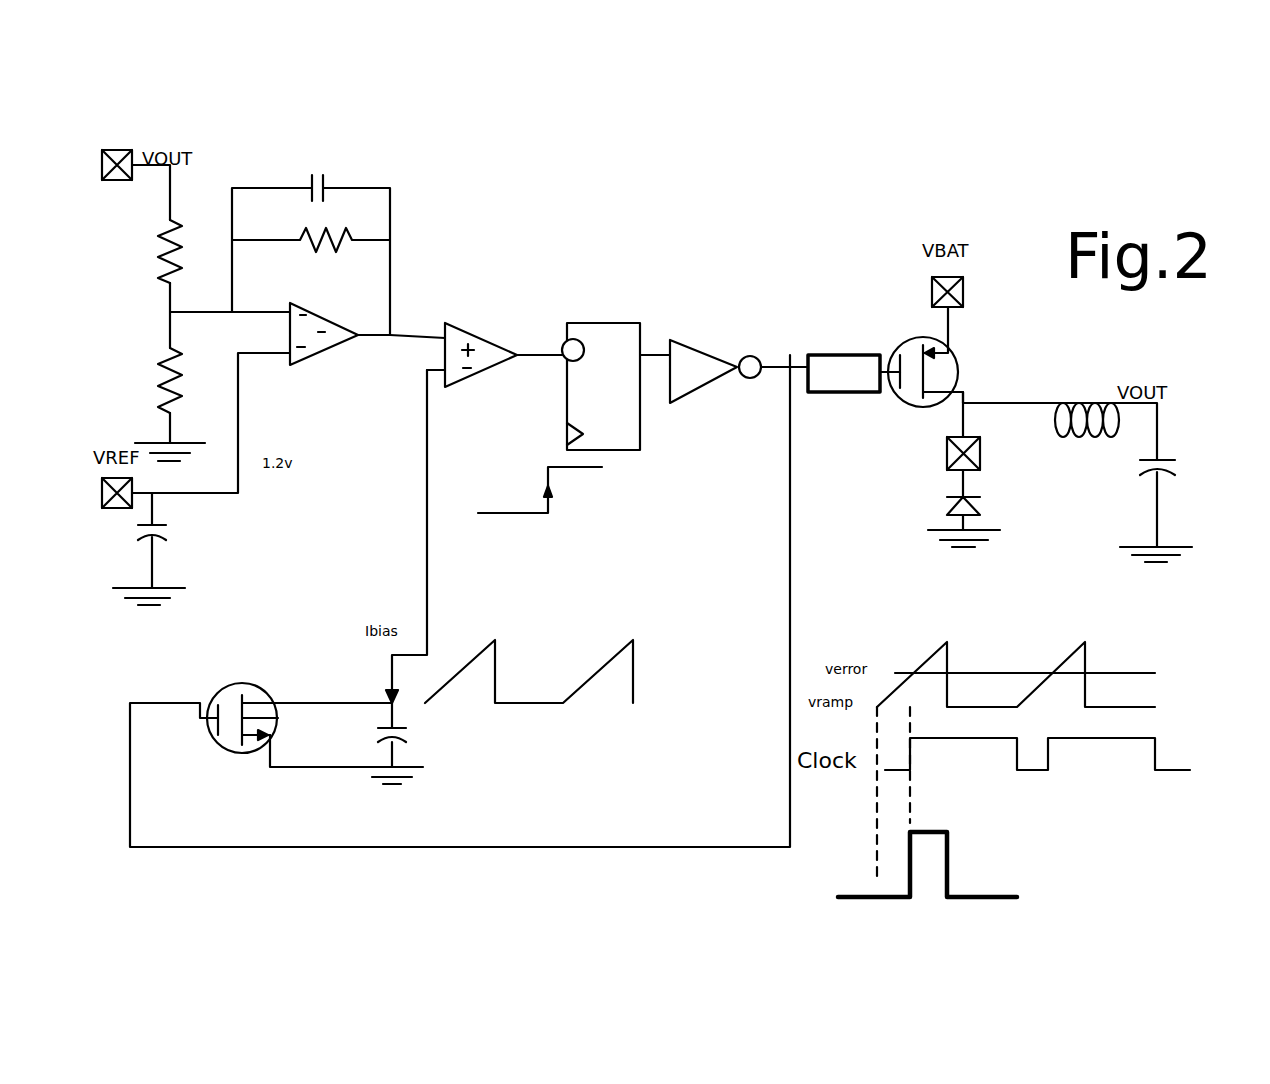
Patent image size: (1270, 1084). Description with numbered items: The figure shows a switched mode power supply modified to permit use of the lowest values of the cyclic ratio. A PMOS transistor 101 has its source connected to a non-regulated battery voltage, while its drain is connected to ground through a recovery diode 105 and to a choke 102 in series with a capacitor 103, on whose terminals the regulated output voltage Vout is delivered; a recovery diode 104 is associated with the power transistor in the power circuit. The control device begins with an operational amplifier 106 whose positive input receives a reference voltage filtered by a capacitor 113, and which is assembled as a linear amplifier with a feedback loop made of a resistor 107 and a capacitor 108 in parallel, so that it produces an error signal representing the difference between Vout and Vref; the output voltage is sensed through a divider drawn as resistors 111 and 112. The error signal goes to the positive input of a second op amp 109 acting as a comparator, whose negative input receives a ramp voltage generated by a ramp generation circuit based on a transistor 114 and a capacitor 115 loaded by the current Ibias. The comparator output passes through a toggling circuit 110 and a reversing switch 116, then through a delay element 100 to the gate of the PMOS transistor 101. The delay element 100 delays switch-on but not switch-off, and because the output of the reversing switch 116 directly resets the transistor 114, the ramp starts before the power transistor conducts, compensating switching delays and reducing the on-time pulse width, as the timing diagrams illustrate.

The delay element 100 is at (823, 352).
The PMOS transistor 101 is at (912, 345).
The choke 102 is at (1090, 403).
The capacitor 103 is at (1175, 462).
The recovery diode 104 is at (950, 505).
The recovery diode 105 is at (994, 457).
The operational amplifier 106 is at (333, 361).
The resistor 107 is at (331, 255).
The capacitor 108 is at (313, 175).
The second op amp 109 is at (486, 359).
The toggling circuit 110 is at (627, 323).
The feedback divider resistor 111 is at (152, 248).
The feedback divider resistor 112 is at (152, 372).
The capacitor 113 is at (190, 549).
The transistor 114 is at (215, 700).
The capacitor 115 is at (426, 736).
The reversing switch 116 is at (715, 387).